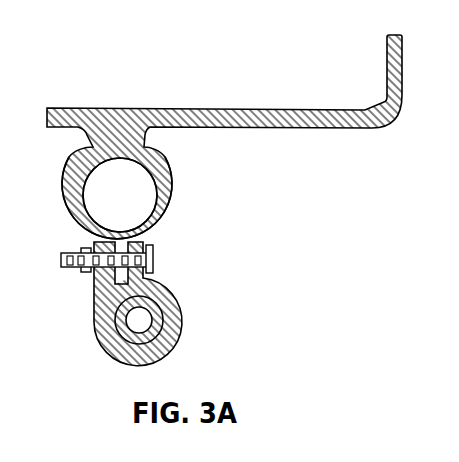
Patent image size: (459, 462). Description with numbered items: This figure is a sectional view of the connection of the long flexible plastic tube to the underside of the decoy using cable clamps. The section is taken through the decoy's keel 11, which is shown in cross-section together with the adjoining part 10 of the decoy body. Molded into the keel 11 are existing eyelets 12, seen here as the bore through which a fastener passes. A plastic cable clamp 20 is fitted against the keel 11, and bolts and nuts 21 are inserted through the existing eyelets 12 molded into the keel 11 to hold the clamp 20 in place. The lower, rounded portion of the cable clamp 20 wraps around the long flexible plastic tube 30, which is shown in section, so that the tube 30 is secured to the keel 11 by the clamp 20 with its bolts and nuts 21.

The mounting plate 10 is at (383, 78).
The keel 11 is at (172, 176).
The eyelets 12 is at (128, 247).
The plastic cable clamps 20 is at (183, 303).
The bolts and nuts 21 is at (157, 258).
The long flexible plastic tube 30 is at (163, 330).